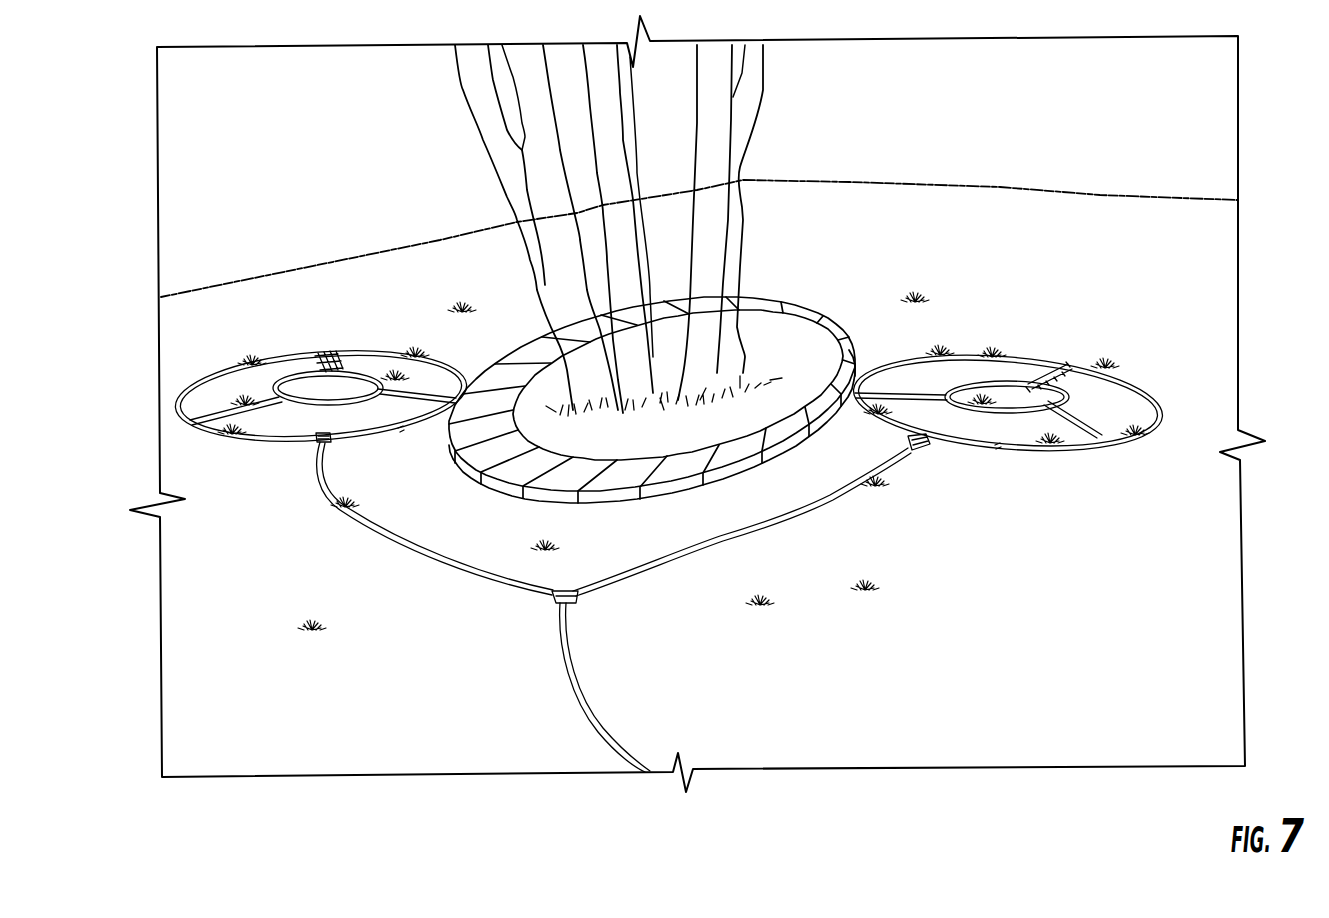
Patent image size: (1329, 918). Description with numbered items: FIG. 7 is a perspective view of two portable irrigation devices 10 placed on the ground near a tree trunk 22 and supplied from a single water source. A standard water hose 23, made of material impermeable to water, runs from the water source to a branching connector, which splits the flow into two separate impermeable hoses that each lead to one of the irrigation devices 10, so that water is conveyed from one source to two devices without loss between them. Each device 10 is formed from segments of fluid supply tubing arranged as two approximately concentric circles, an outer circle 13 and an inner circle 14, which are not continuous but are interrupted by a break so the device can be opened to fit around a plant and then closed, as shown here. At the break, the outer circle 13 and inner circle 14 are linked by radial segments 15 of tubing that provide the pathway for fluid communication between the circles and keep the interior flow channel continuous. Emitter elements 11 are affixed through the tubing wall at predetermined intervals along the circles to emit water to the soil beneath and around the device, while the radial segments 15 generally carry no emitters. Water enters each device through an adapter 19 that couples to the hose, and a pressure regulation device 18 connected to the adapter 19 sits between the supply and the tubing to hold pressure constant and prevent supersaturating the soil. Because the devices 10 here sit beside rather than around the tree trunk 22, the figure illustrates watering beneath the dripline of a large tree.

The portable irrigation device 10 is at (688, 443).
The emitter elements 11 is at (404, 434).
The outer circle 13 is at (217, 378).
The inner circle 14 is at (288, 380).
The radial segments 15 is at (421, 392).
The pressure regulation device 18 is at (318, 434).
The adapter 19 is at (328, 444).
The tree trunk 22 is at (710, 247).
The water hose 23 is at (578, 655).